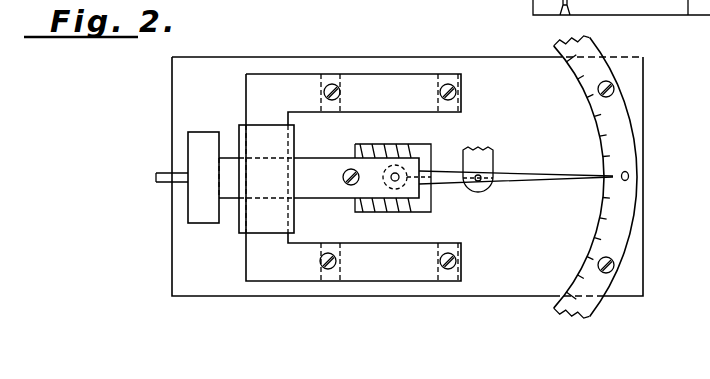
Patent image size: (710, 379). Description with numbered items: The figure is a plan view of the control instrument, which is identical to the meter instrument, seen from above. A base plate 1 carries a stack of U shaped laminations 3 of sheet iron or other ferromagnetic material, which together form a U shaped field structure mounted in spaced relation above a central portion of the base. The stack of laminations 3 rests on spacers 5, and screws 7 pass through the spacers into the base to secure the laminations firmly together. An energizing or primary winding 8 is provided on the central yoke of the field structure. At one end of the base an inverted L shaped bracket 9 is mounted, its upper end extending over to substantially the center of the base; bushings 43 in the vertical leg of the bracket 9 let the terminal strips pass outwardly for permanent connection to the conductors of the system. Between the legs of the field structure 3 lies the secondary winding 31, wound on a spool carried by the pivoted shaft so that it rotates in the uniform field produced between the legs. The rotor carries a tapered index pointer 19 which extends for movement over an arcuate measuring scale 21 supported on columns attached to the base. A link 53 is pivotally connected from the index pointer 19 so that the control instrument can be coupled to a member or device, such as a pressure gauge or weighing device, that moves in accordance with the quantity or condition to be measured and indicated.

The base plate 1 is at (183, 100).
The stack of U shaped laminations 3 is at (255, 263).
The spacers 5 is at (340, 270).
The screws 7 is at (328, 270).
The primary winding 8 is at (240, 222).
The L shaped bracket 9 is at (197, 205).
The index pointer 19 is at (522, 172).
The arcuate measuring scale 21 is at (627, 145).
The secondary winding 31 is at (400, 144).
The bushings 43 is at (170, 172).
The link 53 is at (477, 150).